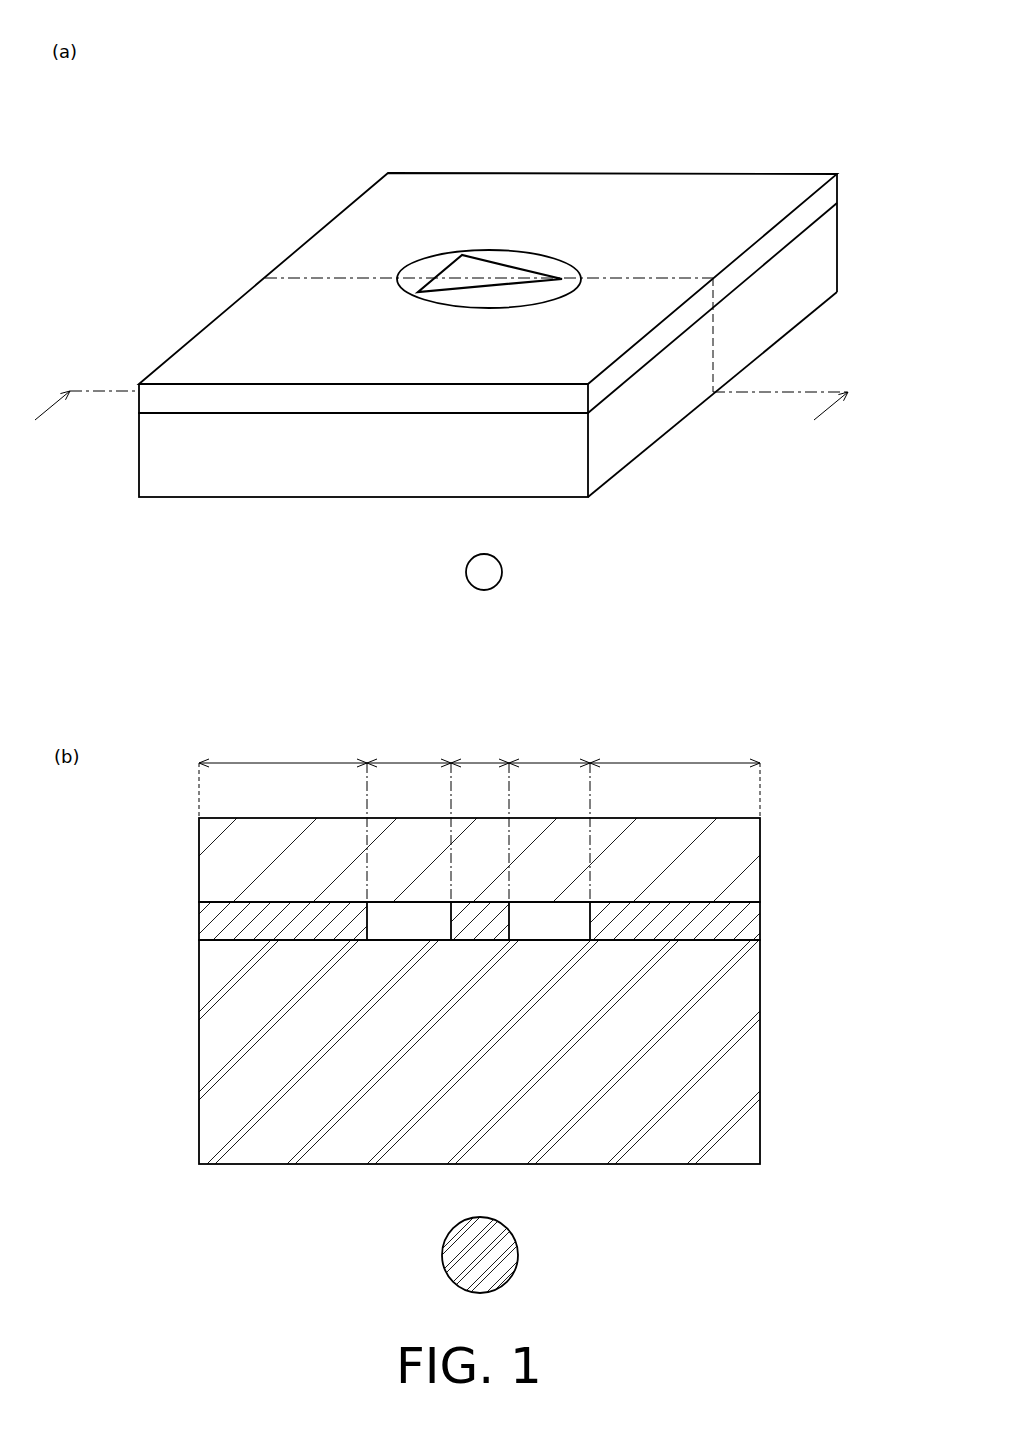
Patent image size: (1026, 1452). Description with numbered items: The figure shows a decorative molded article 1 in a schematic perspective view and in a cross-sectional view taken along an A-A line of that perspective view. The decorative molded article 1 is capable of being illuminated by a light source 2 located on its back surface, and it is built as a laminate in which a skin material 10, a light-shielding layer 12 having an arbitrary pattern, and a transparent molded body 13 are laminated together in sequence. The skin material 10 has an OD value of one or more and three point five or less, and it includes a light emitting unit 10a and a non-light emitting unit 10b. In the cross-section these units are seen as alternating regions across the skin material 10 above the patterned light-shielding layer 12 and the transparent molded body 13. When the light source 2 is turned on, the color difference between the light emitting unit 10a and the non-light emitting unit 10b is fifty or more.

The decorative molded article 1 is at (406, 90).
The skin material 10 is at (238, 313).
The light emitting unit 10a is at (558, 297).
The non-light emitting unit 10b is at (349, 250).
The light-shielding layer 12 is at (762, 915).
The transparent molded body 13 is at (268, 492).
The light source 2 is at (503, 575).